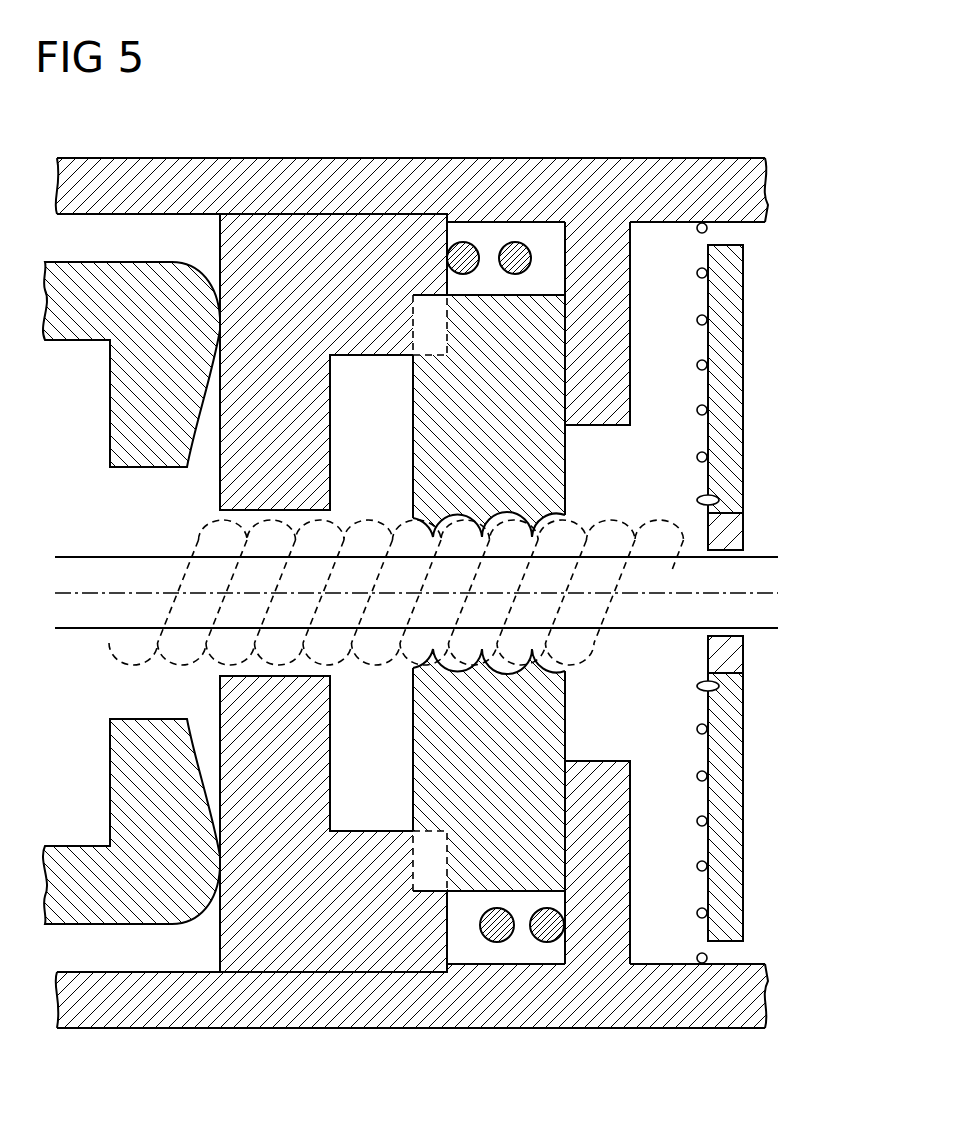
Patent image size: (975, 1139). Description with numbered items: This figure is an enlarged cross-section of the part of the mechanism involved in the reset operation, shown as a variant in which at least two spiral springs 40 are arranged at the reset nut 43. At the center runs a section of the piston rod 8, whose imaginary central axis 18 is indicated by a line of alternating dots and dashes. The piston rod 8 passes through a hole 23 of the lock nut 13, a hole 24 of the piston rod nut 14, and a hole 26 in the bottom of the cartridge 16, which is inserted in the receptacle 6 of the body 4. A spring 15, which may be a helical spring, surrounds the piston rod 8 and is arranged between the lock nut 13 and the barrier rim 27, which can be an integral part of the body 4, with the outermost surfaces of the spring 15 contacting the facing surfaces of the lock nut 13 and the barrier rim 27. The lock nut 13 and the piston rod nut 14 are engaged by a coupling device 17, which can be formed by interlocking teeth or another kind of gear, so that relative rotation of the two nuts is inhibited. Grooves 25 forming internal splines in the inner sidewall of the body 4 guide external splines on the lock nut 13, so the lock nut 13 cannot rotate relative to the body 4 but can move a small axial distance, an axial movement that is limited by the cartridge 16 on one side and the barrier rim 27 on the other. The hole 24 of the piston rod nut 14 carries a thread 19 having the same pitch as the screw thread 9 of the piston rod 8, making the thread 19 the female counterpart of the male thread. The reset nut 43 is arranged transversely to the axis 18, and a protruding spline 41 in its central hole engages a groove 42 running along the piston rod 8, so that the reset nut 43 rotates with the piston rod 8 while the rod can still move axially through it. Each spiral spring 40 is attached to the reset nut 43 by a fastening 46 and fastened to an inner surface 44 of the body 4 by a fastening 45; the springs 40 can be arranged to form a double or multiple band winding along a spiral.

The body 4 is at (730, 173).
The receptacle 6 is at (128, 228).
The piston rod 8 is at (661, 538).
The screw thread 9 is at (520, 668).
The lock nut 13 is at (237, 490).
The piston rod nut 14 is at (540, 593).
The spring 15 is at (516, 244).
The cartridge 16 is at (80, 330).
The coupling device 17 is at (432, 300).
The central axis 18 is at (652, 607).
The thread 19 is at (508, 512).
The hole 23 is at (216, 672).
The hole 24 is at (618, 689).
The grooves 25 is at (160, 228).
The hole 26 is at (140, 488).
The barrier rim 27 is at (622, 296).
The spiral spring 40 is at (699, 455).
The spline 41 is at (737, 530).
The groove 42 is at (776, 593).
The reset nut 43 is at (721, 593).
The inner surface 44 is at (752, 228).
The fastening 45 is at (698, 230).
The fastening 46 is at (720, 500).